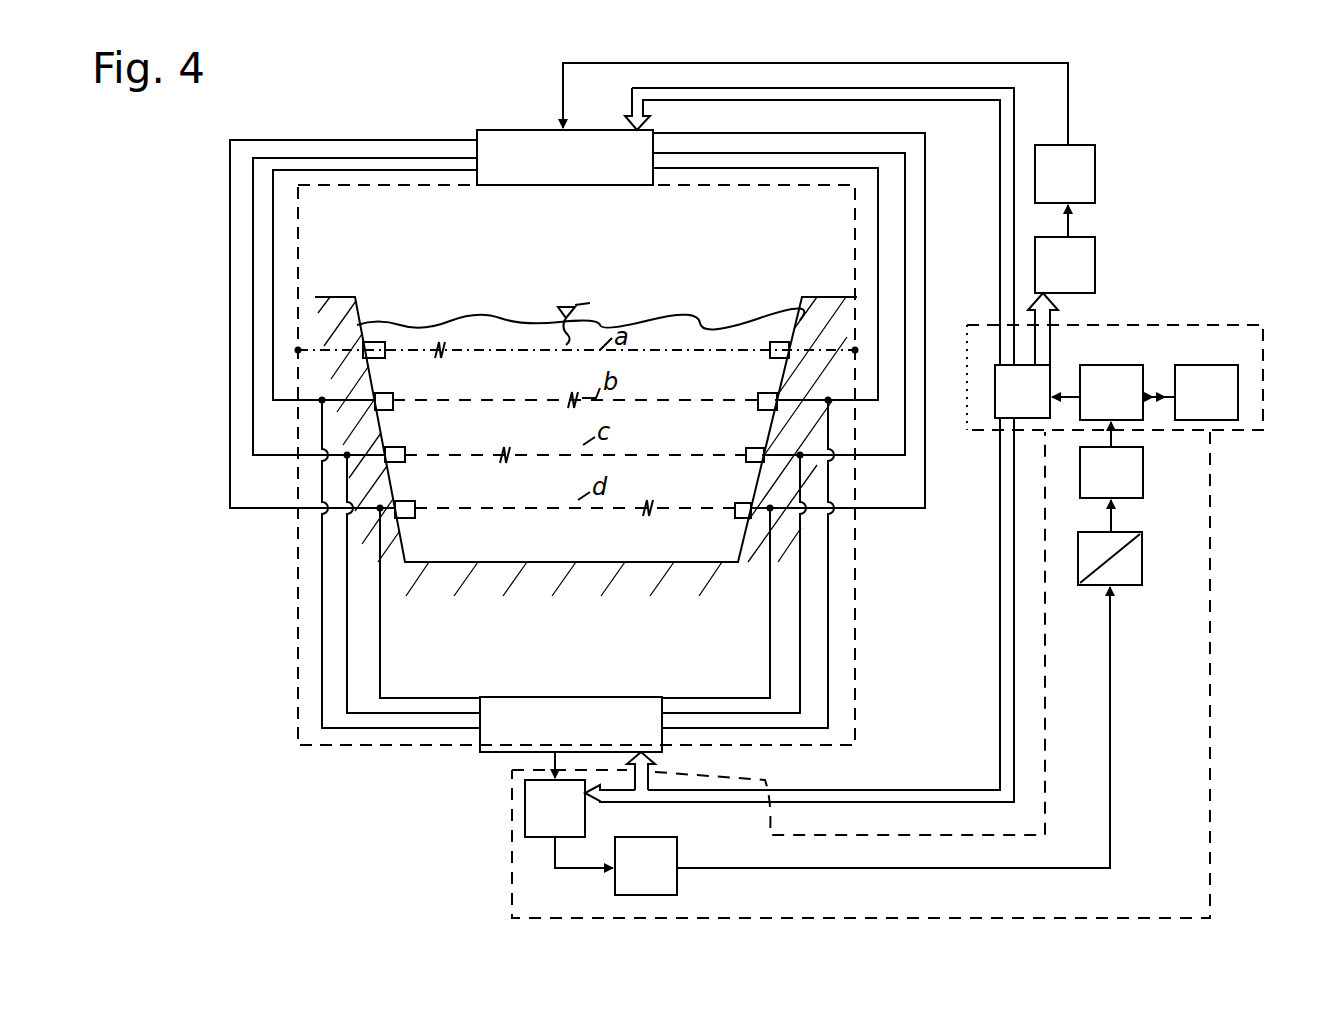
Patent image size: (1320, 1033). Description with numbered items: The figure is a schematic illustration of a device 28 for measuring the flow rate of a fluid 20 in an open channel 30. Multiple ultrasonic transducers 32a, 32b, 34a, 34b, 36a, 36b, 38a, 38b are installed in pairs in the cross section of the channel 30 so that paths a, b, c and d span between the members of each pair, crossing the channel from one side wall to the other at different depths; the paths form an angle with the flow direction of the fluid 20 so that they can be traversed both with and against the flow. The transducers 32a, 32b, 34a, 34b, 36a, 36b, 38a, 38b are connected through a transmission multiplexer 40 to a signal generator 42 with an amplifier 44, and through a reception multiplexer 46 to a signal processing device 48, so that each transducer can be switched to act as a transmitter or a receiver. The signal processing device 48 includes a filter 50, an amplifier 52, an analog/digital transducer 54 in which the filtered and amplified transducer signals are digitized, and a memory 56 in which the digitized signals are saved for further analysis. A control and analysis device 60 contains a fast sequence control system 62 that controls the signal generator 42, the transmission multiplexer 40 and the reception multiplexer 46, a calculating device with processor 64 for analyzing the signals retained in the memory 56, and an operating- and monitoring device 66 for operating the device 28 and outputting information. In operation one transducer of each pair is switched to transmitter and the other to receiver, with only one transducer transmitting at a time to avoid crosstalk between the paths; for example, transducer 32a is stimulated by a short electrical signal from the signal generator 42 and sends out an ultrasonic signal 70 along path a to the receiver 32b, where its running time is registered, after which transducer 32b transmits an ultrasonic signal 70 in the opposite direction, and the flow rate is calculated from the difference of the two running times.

The fluid 20 is at (498, 333).
The device 28 is at (1099, 100).
The open channel 30 is at (527, 565).
The ultrasonic transducer 32a is at (400, 340).
The ultrasonic transducer 32b is at (766, 352).
The ultrasonic transducer 34a is at (394, 406).
The ultrasonic transducer 34b is at (761, 402).
The ultrasonic transducer 36a is at (402, 456).
The ultrasonic transducer 36b is at (746, 458).
The ultrasonic transducer 38a is at (414, 510).
The ultrasonic transducer 38b is at (740, 512).
The transmission multiplexer 40 is at (510, 150).
The signal generator 42 is at (1080, 265).
The amplifier 44 is at (1080, 173).
The reception multiplexer 46 is at (578, 710).
The signal processing device 48 is at (1156, 804).
The filter 50 is at (572, 812).
The amplifier 52 is at (670, 856).
The analog/digital transducer 54 is at (1140, 547).
The memory 56 is at (1128, 478).
The control and analysis device 60 is at (1240, 328).
The fast sequence control system 62 is at (1002, 395).
The calculating device with processor 64 is at (1110, 378).
The operating- and monitoring device 66 is at (1195, 378).
The ultrasonic signal 70 is at (446, 350).